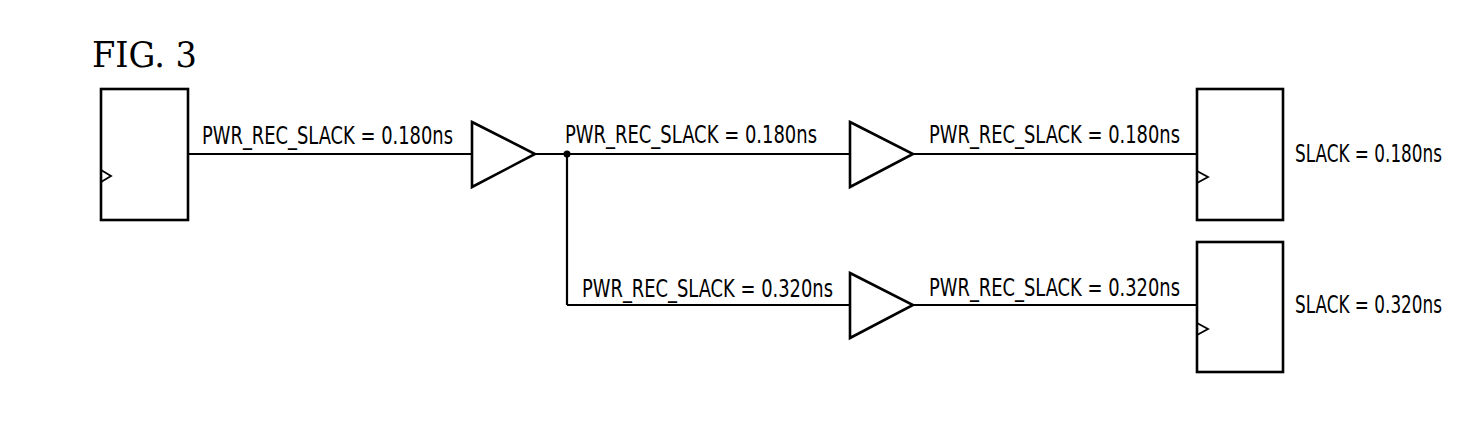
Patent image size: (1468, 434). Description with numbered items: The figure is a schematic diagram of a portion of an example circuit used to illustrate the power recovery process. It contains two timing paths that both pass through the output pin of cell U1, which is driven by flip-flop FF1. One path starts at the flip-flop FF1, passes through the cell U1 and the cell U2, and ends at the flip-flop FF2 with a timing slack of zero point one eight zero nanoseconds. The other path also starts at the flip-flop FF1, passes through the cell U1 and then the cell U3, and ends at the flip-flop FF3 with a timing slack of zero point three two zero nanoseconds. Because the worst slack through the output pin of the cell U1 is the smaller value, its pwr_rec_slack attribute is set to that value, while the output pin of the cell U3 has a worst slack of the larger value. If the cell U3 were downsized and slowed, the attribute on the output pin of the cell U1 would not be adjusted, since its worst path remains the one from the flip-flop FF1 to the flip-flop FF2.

The flip-flop FF1 is at (144, 154).
The cell U1 is at (503, 154).
The cell U2 is at (881, 154).
The cell U3 is at (881, 305).
The flip-flop FF2 is at (1240, 154).
The flip-flop FF3 is at (1240, 307).